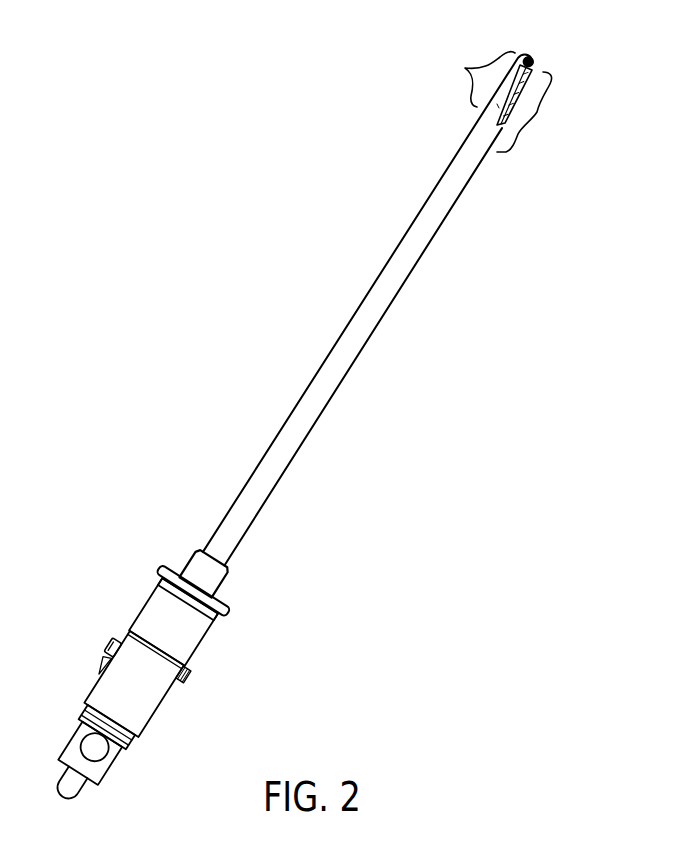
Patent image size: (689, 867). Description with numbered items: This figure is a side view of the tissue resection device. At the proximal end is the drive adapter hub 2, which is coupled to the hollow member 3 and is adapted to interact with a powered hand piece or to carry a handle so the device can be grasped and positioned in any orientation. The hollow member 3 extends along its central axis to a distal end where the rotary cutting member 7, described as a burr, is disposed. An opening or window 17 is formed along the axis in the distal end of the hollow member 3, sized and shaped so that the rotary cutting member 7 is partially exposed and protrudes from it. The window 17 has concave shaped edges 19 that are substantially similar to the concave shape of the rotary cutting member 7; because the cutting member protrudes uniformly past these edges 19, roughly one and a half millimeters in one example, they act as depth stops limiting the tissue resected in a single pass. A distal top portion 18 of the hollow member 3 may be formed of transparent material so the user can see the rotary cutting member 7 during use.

The drive adapter hub 2 is at (283, 658).
The hollow member 3 is at (380, 291).
The rotary cutting member 7 is at (558, 44).
The window 17 is at (538, 113).
The distal top portion 18 is at (475, 72).
The concave shaped edges 19 is at (494, 106).